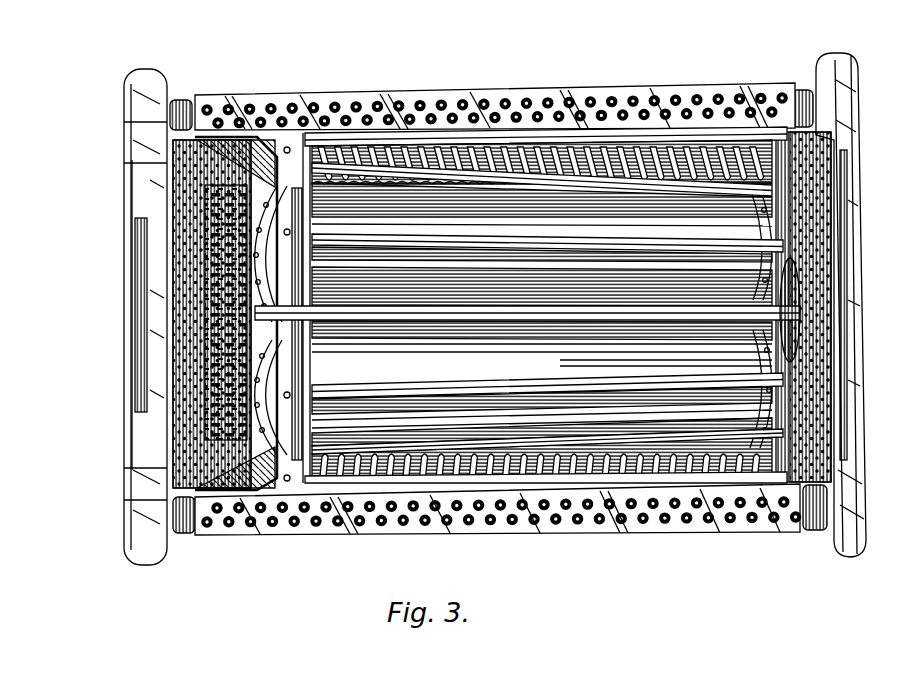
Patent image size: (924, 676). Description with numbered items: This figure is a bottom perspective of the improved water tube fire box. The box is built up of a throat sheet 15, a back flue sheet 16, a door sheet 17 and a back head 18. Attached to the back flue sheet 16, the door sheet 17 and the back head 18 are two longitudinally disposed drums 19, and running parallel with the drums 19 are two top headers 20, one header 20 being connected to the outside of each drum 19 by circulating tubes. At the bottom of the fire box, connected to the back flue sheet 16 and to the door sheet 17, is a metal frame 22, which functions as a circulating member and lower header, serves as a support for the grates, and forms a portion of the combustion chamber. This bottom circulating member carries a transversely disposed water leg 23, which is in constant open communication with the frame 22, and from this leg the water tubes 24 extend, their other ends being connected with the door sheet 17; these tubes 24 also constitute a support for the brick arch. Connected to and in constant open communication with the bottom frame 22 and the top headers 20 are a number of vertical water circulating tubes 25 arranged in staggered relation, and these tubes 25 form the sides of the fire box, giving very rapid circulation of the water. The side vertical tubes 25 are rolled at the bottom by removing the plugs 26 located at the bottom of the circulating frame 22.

The throat sheet 15 is at (133, 198).
The back flue sheet 16 is at (170, 431).
The door sheet 17 is at (793, 308).
The back head 18 is at (863, 520).
The drums 19 is at (542, 308).
The top headers 20 is at (692, 180).
The metal frame 22 is at (728, 92).
The water leg 23 is at (281, 163).
The water tubes 24 is at (542, 193).
The vertical water circulating tubes 25 is at (547, 145).
The plugs 26 is at (310, 527).